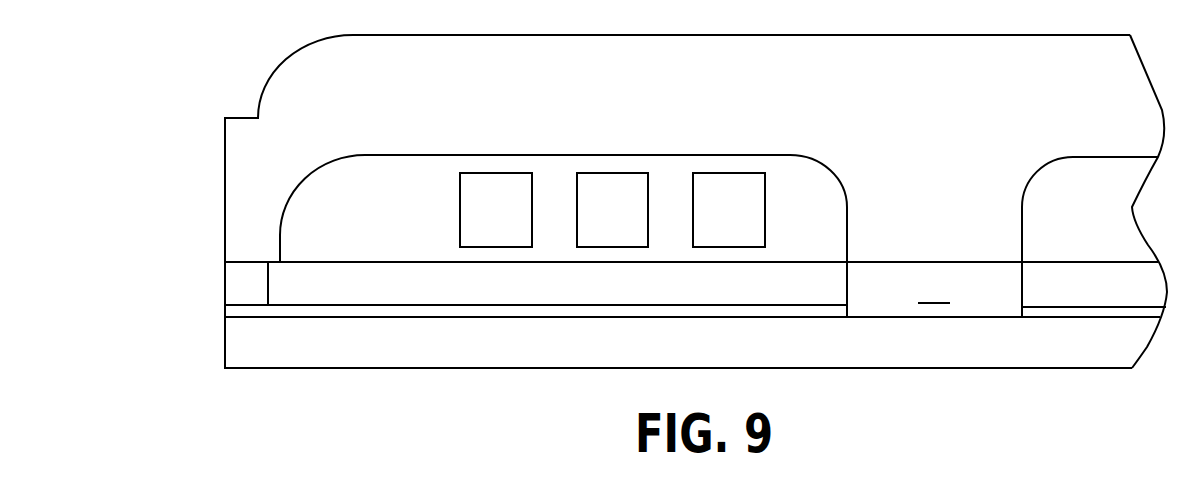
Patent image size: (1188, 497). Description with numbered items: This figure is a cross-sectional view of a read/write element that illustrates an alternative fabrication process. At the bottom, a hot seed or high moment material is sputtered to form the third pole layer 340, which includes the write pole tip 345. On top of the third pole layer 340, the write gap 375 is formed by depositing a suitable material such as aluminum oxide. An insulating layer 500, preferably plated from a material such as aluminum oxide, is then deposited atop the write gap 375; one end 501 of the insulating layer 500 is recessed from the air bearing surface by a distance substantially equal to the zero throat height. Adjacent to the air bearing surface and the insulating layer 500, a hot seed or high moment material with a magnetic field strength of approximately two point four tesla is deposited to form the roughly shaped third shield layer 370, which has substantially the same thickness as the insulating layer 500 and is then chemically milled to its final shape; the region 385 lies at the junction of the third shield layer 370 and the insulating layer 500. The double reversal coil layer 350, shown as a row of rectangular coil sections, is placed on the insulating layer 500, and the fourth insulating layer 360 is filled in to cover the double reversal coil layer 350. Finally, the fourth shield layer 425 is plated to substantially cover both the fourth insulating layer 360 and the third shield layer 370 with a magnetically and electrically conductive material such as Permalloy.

The S4 layer 425 is at (793, 78).
The double reversal coil layer 350 is at (518, 167).
The I4 layer 360 is at (422, 200).
The interface region 385 is at (277, 262).
The S3 layer 370 is at (225, 280).
The end of the insulating layer 501 is at (268, 285).
The insulating layer 500 is at (633, 297).
The P3 layer 340 is at (613, 352).
The write gap 375 is at (207, 312).
The write pole tip 345 is at (207, 350).